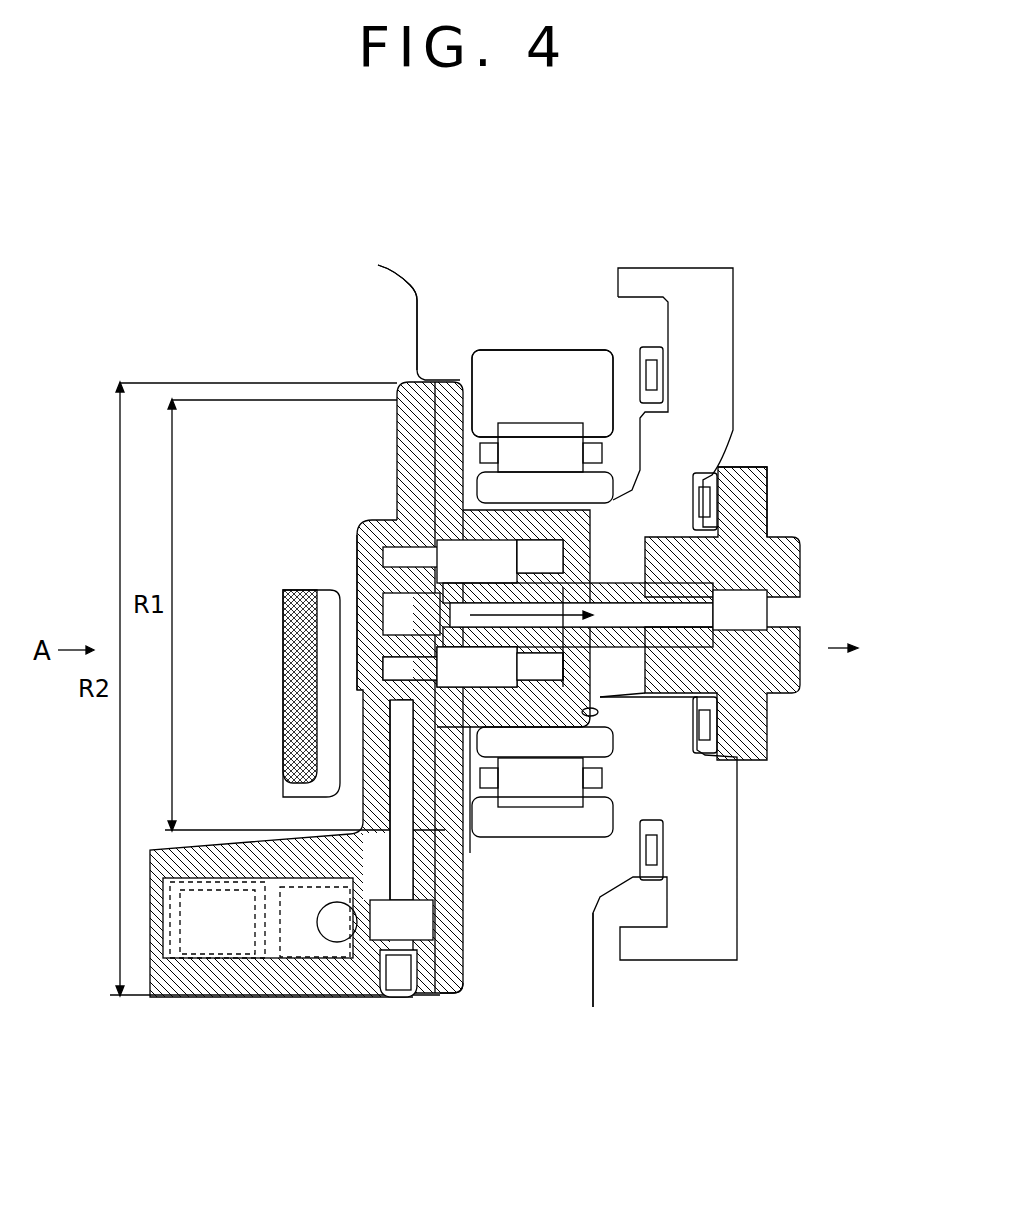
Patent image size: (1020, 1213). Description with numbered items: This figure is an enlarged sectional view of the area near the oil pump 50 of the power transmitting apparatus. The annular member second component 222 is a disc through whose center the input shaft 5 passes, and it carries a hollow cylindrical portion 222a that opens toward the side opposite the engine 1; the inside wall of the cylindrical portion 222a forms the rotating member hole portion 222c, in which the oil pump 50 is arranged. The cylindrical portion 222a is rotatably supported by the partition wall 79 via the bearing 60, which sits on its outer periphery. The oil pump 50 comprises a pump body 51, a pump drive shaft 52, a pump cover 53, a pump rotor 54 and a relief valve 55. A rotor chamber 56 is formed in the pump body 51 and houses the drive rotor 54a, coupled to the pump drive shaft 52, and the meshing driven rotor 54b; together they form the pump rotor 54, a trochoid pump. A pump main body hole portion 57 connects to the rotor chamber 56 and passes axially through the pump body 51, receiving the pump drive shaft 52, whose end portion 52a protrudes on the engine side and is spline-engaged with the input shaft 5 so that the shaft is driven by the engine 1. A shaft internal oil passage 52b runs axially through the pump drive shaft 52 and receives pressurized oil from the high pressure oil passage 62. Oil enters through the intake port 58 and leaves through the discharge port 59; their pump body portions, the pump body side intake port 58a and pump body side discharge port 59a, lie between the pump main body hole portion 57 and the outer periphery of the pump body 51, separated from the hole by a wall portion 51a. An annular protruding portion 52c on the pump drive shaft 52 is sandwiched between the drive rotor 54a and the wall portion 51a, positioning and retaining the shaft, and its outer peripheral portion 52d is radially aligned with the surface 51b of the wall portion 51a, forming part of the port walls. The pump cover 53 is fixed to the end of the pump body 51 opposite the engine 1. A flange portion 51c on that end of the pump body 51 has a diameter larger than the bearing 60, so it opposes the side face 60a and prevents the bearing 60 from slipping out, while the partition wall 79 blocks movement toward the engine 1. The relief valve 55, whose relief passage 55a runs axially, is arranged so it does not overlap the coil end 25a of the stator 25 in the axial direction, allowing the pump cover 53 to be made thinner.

The engine 1 is at (831, 650).
The input shaft 5 is at (773, 563).
The stator 25 is at (259, 693).
The coil end 25a is at (330, 757).
The oil pump 50 is at (338, 560).
The pump body 51 is at (575, 540).
The wall portion 51a is at (562, 653).
The radially outward surface of the wall portion 51b is at (537, 675).
The flange portion 51c is at (450, 977).
The pump drive shaft 52 is at (635, 590).
The end portion of the pump drive shaft 52a is at (702, 606).
The shaft internal oil passage 52b is at (690, 604).
The protruding portion 52c is at (532, 533).
The outer peripheral portion of the protruding portion 52d is at (523, 680).
The pump cover 53 is at (405, 435).
The pump rotor 54 is at (420, 533).
The drive rotor 54a is at (508, 552).
The driven rotor 54b is at (497, 530).
The relief valve 55 is at (291, 947).
The relief passage 55a is at (210, 967).
The rotor chamber 56 is at (445, 395).
The pump main body hole portion 57 is at (615, 585).
The intake port 58 is at (367, 527).
The pump body side intake port 58a is at (553, 552).
The discharge port 59 is at (393, 667).
The pump body side discharge port 59a is at (550, 657).
The bearing 60 is at (598, 410).
The side face of the bearing 60a is at (478, 395).
The high pressure oil passage 62 is at (397, 813).
The partition wall 79 is at (415, 335).
The annular member second component 222 is at (688, 268).
The cylindrical portion 222a is at (480, 723).
The rotating member hole portion 222c is at (600, 717).